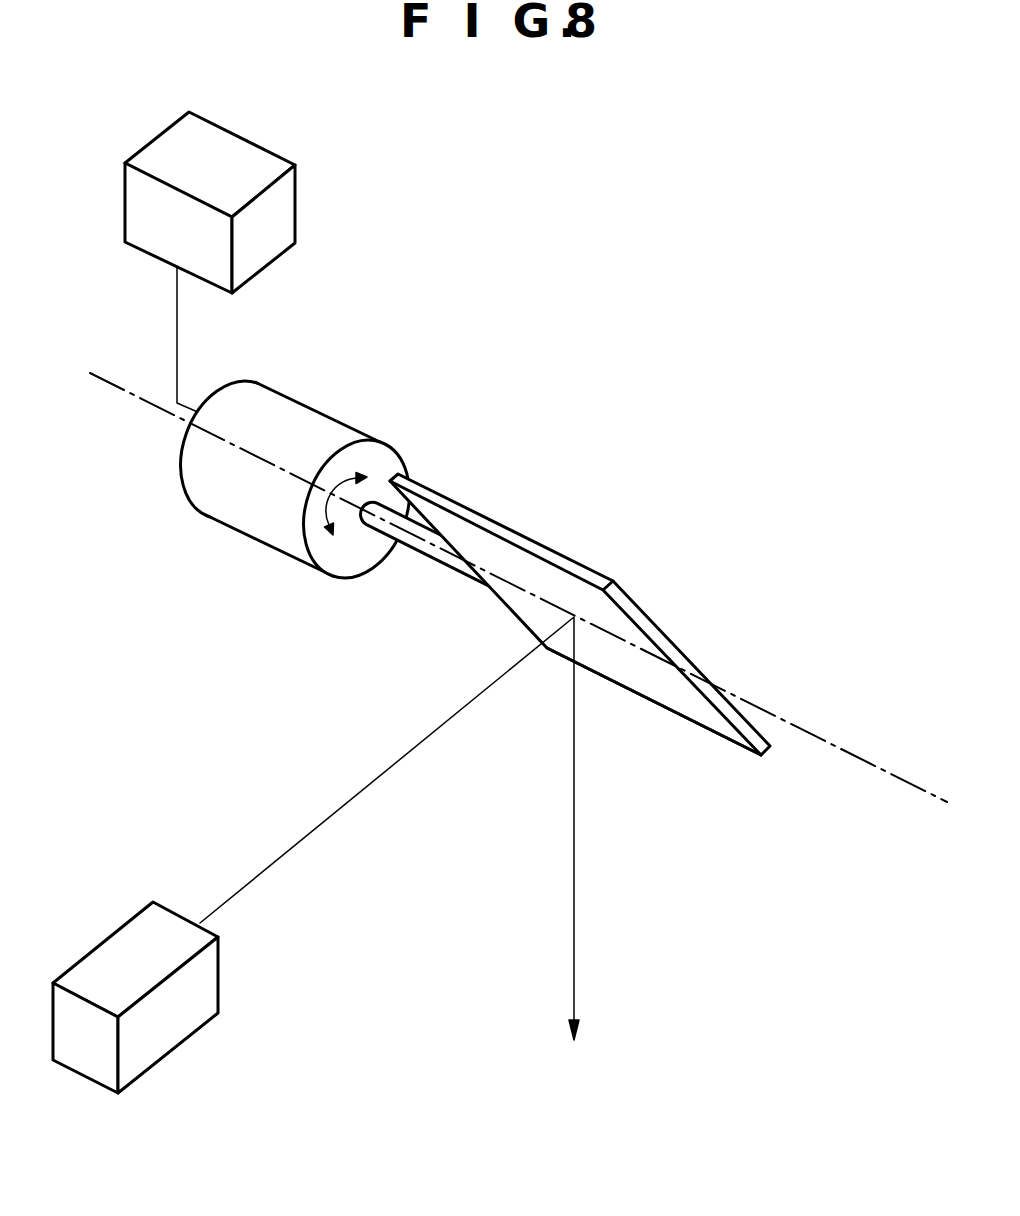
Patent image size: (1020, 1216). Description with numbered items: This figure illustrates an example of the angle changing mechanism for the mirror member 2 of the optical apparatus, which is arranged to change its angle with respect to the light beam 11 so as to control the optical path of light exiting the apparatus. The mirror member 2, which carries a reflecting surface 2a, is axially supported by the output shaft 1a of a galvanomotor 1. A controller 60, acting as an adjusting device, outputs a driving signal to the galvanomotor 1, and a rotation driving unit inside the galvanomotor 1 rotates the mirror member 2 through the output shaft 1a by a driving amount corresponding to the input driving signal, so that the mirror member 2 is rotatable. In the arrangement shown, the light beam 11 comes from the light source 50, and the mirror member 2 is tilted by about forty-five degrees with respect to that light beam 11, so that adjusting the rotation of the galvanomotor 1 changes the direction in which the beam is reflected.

The galvanomotor 1 is at (320, 407).
The output shaft 1a is at (431, 561).
The mirror member 2 is at (567, 532).
The reflecting surface 2a is at (655, 701).
The light beam 11 is at (335, 811).
The light source 50 is at (108, 937).
The controller 60 is at (247, 140).